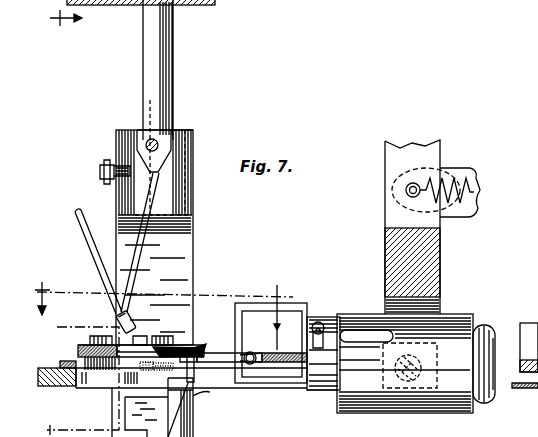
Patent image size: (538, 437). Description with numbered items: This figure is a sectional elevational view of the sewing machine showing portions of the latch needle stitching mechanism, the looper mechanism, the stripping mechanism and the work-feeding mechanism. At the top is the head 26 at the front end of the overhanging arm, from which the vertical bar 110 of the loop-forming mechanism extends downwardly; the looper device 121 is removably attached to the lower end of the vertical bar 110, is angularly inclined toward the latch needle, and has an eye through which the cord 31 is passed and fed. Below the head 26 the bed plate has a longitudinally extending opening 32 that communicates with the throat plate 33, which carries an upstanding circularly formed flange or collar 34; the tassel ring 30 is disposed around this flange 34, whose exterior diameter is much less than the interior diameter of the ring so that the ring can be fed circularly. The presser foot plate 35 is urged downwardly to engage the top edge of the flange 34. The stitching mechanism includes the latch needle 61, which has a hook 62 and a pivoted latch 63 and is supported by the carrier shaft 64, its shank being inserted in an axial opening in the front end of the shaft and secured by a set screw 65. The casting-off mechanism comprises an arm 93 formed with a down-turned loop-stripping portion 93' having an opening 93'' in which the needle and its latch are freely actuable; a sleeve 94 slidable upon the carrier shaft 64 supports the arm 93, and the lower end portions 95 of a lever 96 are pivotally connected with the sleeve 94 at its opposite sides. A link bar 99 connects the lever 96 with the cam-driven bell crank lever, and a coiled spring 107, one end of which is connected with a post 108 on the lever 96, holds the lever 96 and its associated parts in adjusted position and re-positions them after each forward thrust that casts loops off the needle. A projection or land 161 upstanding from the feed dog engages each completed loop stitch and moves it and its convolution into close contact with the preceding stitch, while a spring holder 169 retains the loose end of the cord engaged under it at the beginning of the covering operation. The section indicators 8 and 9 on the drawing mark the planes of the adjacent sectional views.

The section line 9- 9 is at (74, 22).
The head 26 is at (196, 5).
The vertical bar 110 is at (162, 70).
The presser foot plate 35 is at (182, 258).
The looper device 121 is at (138, 232).
The cord 31 is at (98, 270).
The section line 8- 8 is at (164, 359).
The tassel ring 30 is at (70, 363).
The upstanding throat plate flange 34 is at (80, 357).
The throat plate 33 is at (78, 385).
The longitudinally extending opening 32 is at (103, 381).
The hook 62 is at (198, 347).
The arm 93 is at (271, 323).
The down-turned loop-stripping portion 93' is at (229, 341).
The opening 93'' is at (273, 343).
The pivoted latch 63 is at (250, 364).
The latch needle 61 is at (290, 362).
The set screw 65 is at (320, 328).
The carrier shaft 64 is at (330, 358).
The sleeve 94 is at (456, 340).
The lower end portions 95 is at (422, 365).
The lever 96 is at (428, 156).
The link bar 99 is at (478, 203).
The coiled spring 107 is at (460, 178).
The post 108 is at (410, 195).
The projection or land 161 is at (194, 375).
The spring holder 169 is at (200, 396).